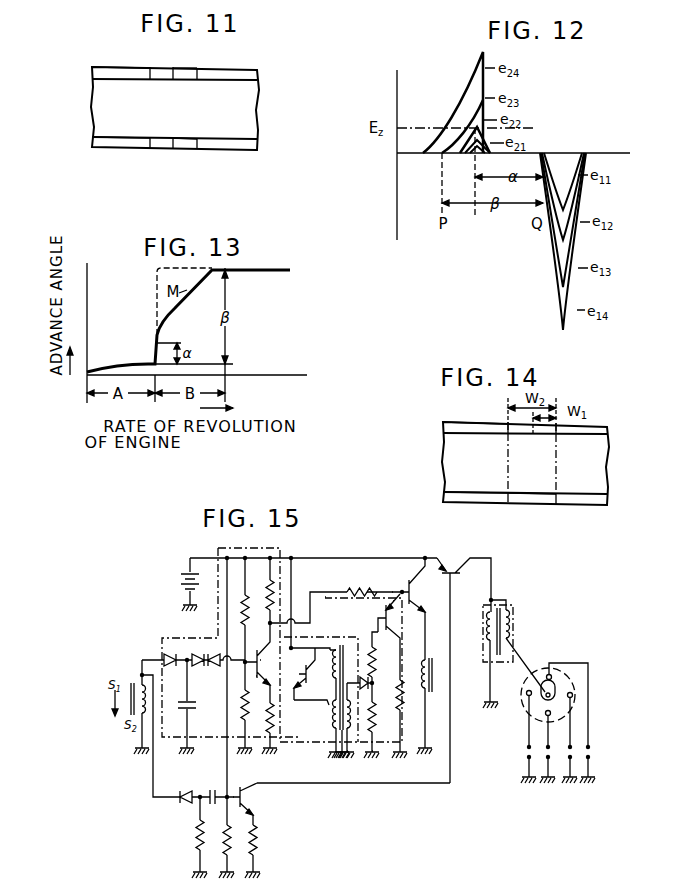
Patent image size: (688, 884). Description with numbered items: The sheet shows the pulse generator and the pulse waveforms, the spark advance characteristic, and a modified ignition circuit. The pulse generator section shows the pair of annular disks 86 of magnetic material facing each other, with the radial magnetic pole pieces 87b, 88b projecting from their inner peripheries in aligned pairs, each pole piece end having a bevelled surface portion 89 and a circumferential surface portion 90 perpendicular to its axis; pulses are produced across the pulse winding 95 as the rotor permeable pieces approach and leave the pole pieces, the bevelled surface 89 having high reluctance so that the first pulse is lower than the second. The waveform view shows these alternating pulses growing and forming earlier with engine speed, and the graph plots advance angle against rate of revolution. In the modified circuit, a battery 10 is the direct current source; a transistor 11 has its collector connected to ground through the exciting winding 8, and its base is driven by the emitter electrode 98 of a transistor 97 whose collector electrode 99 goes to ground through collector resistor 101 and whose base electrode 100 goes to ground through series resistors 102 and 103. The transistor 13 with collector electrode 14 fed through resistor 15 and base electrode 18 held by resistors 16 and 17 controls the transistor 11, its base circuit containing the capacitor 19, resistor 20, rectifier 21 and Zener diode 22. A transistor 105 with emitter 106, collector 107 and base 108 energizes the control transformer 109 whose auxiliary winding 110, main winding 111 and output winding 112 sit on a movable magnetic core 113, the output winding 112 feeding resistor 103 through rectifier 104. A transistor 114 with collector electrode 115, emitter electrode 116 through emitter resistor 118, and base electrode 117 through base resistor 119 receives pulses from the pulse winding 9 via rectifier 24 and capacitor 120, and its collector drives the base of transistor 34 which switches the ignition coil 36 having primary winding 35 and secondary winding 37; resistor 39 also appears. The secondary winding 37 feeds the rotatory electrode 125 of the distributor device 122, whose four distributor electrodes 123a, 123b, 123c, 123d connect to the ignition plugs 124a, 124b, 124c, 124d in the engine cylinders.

In FIG. 15, the exciting winding 8 is at (433, 676).
In FIG. 15, the pulse winding 9 is at (139, 683).
In FIG. 15, the battery 10 is at (182, 581).
In FIG. 15, the p-n-p type transistor 11 is at (420, 598).
In FIG. 15, the n-p-n type transistor 13 is at (266, 662).
In FIG. 15, the collector electrode 14 is at (265, 645).
In FIG. 15, the resistor 15 is at (268, 590).
In FIG. 15, the resistor 16 is at (254, 610).
In FIG. 15, the resistor 17 is at (237, 708).
In FIG. 15, the base electrode 18 is at (254, 687).
In FIG. 15, the capacitor 19 is at (196, 704).
In FIG. 15, the resistor 20 is at (268, 728).
In FIG. 15, the rectifier or diode 21 is at (172, 670).
In FIG. 15, the Zener diode 22 is at (207, 670).
In FIG. 15, the rectifier 24 is at (182, 788).
In FIG. 15, the p-n-p type transistor 34 is at (443, 556).
In FIG. 15, the primary winding 35 is at (487, 625).
In FIG. 15, the ignition coil 36 is at (514, 610).
In FIG. 15, the secondary winding 37 is at (510, 627).
In FIG. 15, the resistor 39 is at (362, 582).
In FIG. 11, the annular disks of magnetic material 86 is at (118, 73).
In FIG. 14, the annular disks of magnetic material 86 is at (470, 428).
In FIG. 11, the radial magnetic pole piece 87b is at (184, 143).
In FIG. 14, the radial magnetic pole piece 87b is at (532, 497).
In FIG. 11, the radial magnetic pole piece 88b is at (184, 73).
In FIG. 14, the radial magnetic pole piece 88b is at (536, 434).
In FIG. 11, the bevelled surface portion 89 is at (158, 73).
In FIG. 11, the circumferential surface portion 90 is at (192, 73).
In FIG. 11, the pulse winding 95 is at (175, 108).
In FIG. 14, the pulse winding 95 is at (525, 463).
In FIG. 15, the p-n-p type transistor 97 is at (392, 637).
In FIG. 15, the emitter electrode 98 is at (396, 591).
In FIG. 15, the collector electrode 99 is at (374, 656).
In FIG. 15, the base electrode 100 is at (392, 603).
In FIG. 15, the collector resistor 101 is at (400, 685).
In FIG. 15, the resistor 102 is at (364, 676).
In FIG. 15, the resistor 103 is at (372, 756).
In FIG. 15, the rectifier 104 is at (374, 720).
In FIG. 15, the p-n-p type transistor 105 is at (294, 702).
In FIG. 15, the emitter electrode 106 is at (300, 674).
In FIG. 15, the collector electrode 107 is at (329, 708).
In FIG. 15, the base electrode 108 is at (333, 668).
In FIG. 15, the control transformer 109 is at (342, 645).
In FIG. 15, the auxiliary winding 110 is at (336, 648).
In FIG. 15, the main winding 111 is at (342, 725).
In FIG. 15, the output winding 112 is at (349, 757).
In FIG. 15, the magnetic core 113 is at (340, 755).
In FIG. 15, the n-p-n type transistor 114 is at (257, 798).
In FIG. 15, the collector electrode 115 is at (248, 787).
In FIG. 15, the emitter electrode 116 is at (252, 811).
In FIG. 15, the base electrode 117 is at (237, 792).
In FIG. 15, the emitter resistor 118 is at (258, 841).
In FIG. 15, the base resistor 119 is at (233, 848).
In FIG. 15, the capacitor 120 is at (208, 787).
In FIG. 15, the distributor device 122 is at (566, 653).
In FIG. 15, the distributor electrode 123a is at (547, 675).
In FIG. 15, the distributor electrode 123b is at (573, 696).
In FIG. 15, the distributor electrode 123c is at (551, 714).
In FIG. 15, the distributor electrode 123d is at (527, 696).
In FIG. 15, the ignition plug 124a is at (591, 756).
In FIG. 15, the ignition plug 124b is at (572, 760).
In FIG. 15, the ignition plug 124c is at (546, 760).
In FIG. 15, the ignition plug 124d is at (526, 755).
In FIG. 15, the rotatory electrode 125 is at (557, 684).